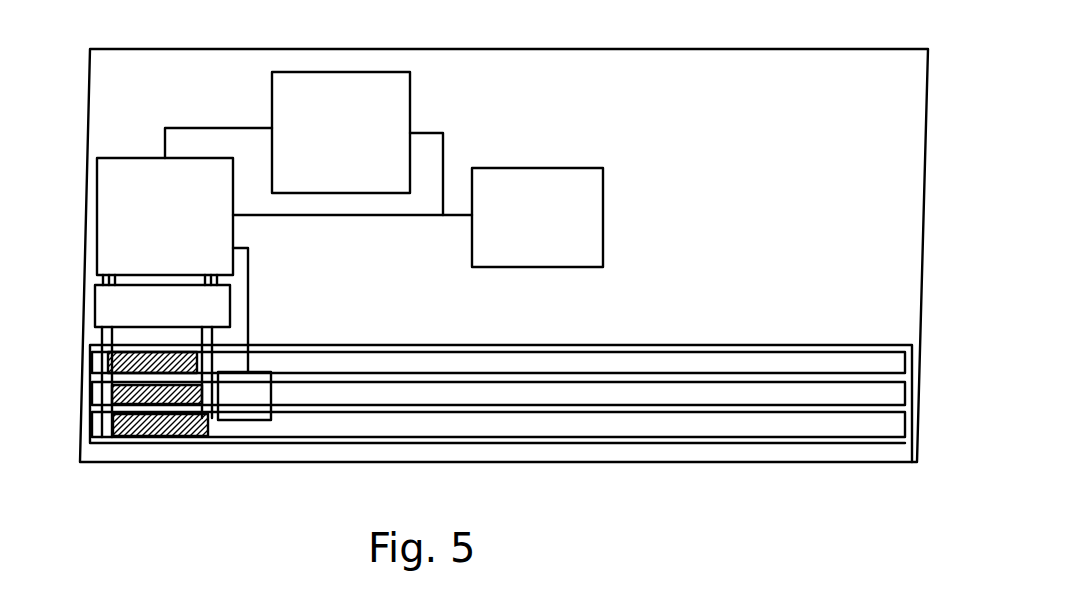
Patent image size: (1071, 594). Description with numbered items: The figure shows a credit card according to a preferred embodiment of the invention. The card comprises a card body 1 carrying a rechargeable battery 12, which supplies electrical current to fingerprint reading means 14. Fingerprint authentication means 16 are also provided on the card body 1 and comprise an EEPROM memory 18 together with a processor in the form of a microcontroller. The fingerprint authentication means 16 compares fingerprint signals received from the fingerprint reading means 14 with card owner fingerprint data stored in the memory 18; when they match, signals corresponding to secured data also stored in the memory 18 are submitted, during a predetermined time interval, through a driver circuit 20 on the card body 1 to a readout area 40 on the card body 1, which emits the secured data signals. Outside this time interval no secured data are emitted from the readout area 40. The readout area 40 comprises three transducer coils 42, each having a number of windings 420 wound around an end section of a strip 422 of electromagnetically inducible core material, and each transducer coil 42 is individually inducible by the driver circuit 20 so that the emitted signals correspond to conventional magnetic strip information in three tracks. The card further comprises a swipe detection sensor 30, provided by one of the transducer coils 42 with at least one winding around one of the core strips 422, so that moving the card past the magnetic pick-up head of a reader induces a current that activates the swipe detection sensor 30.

The card body 1 is at (640, 102).
The rechargeable battery 12 is at (538, 205).
The fingerprint reading means 14 is at (343, 118).
The fingerprint authentication means 16 is at (152, 222).
The EEPROM memory 18 is at (138, 252).
The driver circuit 20 is at (147, 310).
The swipe detection sensor 30 is at (243, 397).
The readout area 40 is at (482, 431).
The transducer coil 42 is at (92, 424).
The windings 420 is at (165, 428).
The strip 422 is at (497, 428).